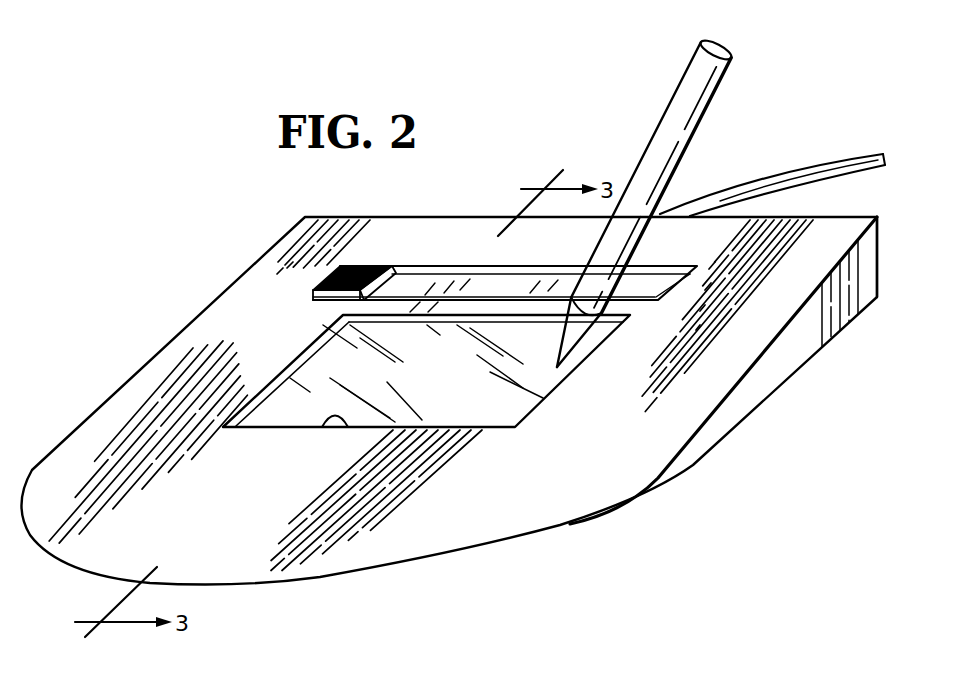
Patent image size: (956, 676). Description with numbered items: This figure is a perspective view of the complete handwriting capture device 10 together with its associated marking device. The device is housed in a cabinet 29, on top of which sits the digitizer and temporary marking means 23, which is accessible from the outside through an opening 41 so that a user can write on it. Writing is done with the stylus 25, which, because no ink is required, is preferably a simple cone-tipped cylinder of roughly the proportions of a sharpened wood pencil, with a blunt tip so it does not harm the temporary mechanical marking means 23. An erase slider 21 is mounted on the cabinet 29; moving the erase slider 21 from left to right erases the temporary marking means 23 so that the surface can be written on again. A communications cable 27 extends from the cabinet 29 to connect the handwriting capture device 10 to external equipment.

The handwriting capture device 10 is at (183, 207).
The erase slider 21 is at (367, 266).
The digitizer and temporary marking means 23 is at (500, 410).
The stylus 25 is at (733, 65).
The communications cable 27 is at (805, 167).
The cabinet 29 is at (843, 215).
The opening 41 is at (323, 426).